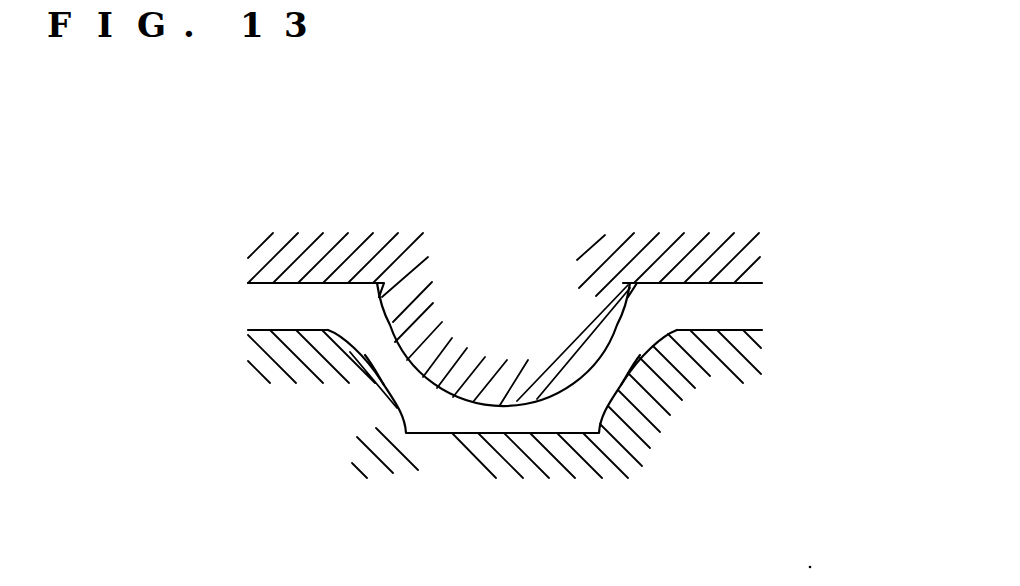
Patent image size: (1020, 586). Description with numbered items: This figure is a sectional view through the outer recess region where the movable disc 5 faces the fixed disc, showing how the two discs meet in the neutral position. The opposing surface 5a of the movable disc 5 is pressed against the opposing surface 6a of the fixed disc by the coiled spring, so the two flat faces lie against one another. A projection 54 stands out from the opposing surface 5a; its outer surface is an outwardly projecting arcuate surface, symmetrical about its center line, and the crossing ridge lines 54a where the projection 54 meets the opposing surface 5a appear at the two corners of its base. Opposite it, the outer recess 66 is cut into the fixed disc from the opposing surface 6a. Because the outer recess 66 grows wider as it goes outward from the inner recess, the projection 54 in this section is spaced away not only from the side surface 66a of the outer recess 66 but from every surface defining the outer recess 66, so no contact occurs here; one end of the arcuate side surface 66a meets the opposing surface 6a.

The movable disc 5 is at (557, 346).
The opposing surface of the movable disc 5a is at (733, 283).
The opposing surface of the fixed disc 6a is at (732, 330).
The projection 54 is at (532, 401).
The crossing ridge line 54a is at (377, 284).
The outer recess 66 is at (493, 449).
The side surface of the outer recess 66a is at (392, 397).